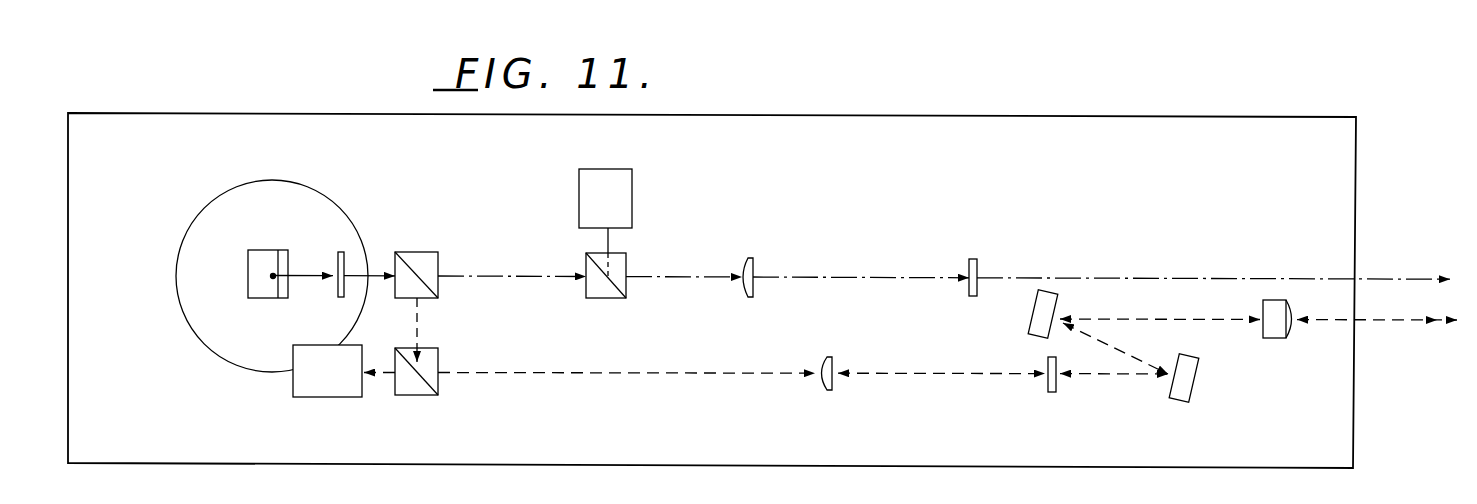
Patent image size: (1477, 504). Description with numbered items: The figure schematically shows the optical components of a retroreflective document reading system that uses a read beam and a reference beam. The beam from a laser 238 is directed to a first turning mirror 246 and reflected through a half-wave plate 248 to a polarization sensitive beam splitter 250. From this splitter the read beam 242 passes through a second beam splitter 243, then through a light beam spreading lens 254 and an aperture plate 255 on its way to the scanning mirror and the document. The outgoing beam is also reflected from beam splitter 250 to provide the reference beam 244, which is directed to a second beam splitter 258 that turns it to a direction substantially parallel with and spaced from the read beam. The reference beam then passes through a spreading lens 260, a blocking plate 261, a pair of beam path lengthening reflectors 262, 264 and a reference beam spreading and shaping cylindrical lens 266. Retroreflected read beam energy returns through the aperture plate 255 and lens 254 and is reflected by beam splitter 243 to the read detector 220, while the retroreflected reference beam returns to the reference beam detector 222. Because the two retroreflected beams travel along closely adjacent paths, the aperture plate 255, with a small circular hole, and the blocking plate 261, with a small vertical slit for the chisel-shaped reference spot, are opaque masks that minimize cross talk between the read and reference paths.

The laser 238 is at (237, 187).
The first turning mirror 246 is at (273, 299).
The half-wave plate 248 is at (340, 251).
The polarization sensitive beam splitter 250 is at (417, 251).
The second beam splitter 258 is at (438, 353).
The reference beam detector 222 is at (293, 389).
The read detector 220 is at (579, 183).
The second beam splitter 243 is at (626, 259).
The read beam 242 is at (547, 272).
The light beam spreading lens 254 is at (750, 258).
The aperture plate 255 is at (977, 263).
The beam path lengthening reflector 264 is at (1027, 330).
The spreading lens 260 is at (827, 390).
The blocking plate 261 is at (1052, 392).
The beam path lengthening reflector 262 is at (1192, 397).
The reference beam spreading and shaping cylindrical lens 266 is at (1277, 338).
The reference beam 244 is at (610, 373).